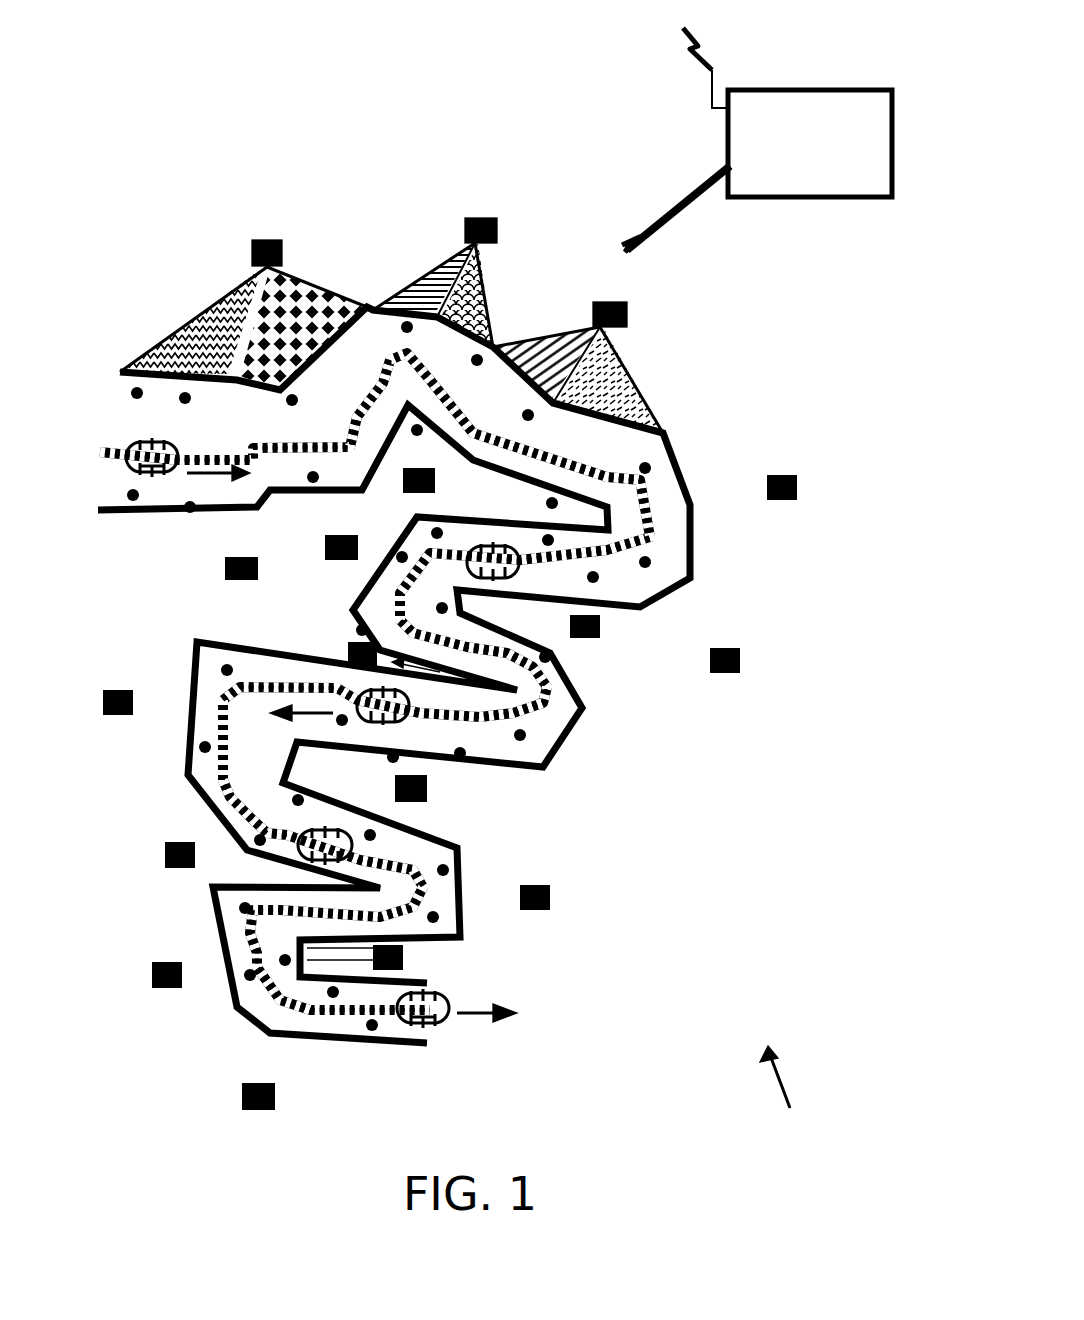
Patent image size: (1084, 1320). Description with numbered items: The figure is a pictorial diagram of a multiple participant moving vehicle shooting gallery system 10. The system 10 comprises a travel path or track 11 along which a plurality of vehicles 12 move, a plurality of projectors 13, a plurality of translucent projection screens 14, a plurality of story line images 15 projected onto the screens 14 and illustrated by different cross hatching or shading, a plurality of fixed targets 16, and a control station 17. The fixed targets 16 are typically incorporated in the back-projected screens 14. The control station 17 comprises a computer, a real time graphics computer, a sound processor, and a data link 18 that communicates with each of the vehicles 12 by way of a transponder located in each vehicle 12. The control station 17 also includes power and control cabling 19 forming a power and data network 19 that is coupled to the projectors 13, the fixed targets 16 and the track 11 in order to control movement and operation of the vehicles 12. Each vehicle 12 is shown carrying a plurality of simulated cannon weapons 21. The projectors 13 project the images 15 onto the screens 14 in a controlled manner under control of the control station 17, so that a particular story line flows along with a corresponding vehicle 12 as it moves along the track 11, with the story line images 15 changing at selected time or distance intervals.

The multiple participant moving vehicle shooting gallery system 10 is at (502, 805).
The travel path 11 is at (135, 795).
The vehicle 12 is at (132, 442).
The projector 13 is at (780, 500).
The translucent projection screen 14 is at (722, 545).
The story line image 15 is at (222, 290).
The fixed target 16 is at (287, 401).
The control station 17 is at (798, 198).
The data link 18 is at (710, 92).
The power and control cabling 19 is at (680, 197).
The simulated cannon weapon 21 is at (173, 478).